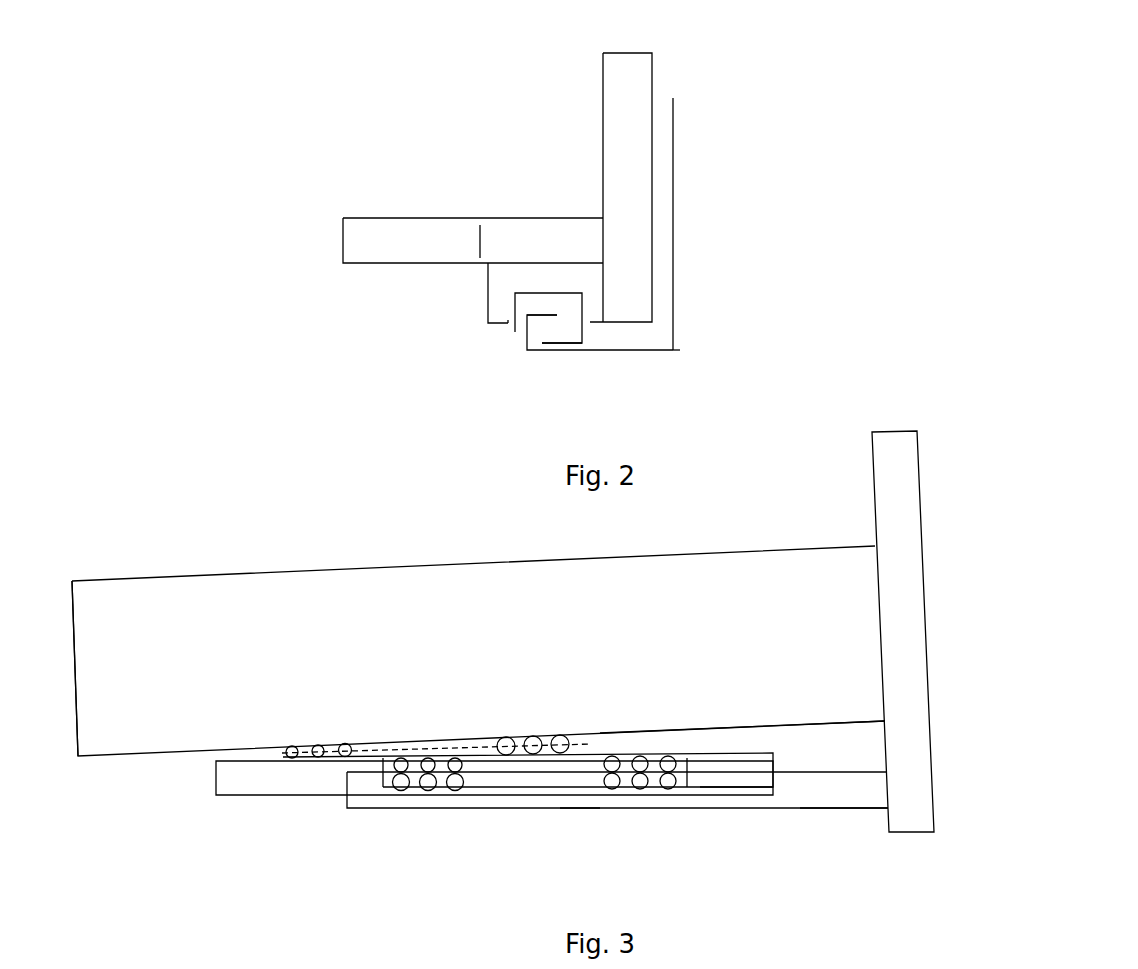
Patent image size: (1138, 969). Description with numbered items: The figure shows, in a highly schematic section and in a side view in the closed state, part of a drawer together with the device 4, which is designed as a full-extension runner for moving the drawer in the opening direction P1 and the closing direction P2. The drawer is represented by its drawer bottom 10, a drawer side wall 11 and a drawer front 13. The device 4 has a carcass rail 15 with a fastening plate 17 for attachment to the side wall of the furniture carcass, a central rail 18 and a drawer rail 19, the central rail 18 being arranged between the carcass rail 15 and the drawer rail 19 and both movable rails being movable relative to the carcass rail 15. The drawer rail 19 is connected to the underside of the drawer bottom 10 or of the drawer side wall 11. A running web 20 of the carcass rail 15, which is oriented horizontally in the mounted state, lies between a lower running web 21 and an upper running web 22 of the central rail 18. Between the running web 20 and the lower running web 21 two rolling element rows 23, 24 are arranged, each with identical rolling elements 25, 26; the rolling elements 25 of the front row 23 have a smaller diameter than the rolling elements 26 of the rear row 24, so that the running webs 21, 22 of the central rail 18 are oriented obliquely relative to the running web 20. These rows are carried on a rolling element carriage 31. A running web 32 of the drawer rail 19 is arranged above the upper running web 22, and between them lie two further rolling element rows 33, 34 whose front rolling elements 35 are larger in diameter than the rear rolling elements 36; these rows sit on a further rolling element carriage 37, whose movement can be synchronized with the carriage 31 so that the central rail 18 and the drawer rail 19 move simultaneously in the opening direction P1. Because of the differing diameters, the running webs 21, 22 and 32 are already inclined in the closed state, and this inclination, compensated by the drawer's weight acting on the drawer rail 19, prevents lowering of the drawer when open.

In FIG. 2, the device 4 is at (699, 357).
In FIG. 3, the device 4 is at (560, 825).
In FIG. 2, the drawer bottom 10 is at (428, 228).
In FIG. 2, the drawer side wall 11 is at (637, 88).
In FIG. 3, the drawer side wall 11 is at (452, 648).
In FIG. 3, the drawer front 13 is at (905, 478).
In FIG. 2, the carcass rail 15 is at (626, 356).
In FIG. 3, the carcass rail 15 is at (342, 811).
In FIG. 2, the fastening plate 17 is at (678, 148).
In FIG. 2, the central rail 18 is at (507, 327).
In FIG. 3, the central rail 18 is at (213, 780).
In FIG. 2, the drawer rail 19 is at (484, 297).
In FIG. 3, the drawer rail 19 is at (110, 764).
In FIG. 2, the running web of the carcass rail 20 is at (543, 316).
In FIG. 3, the running web of the carcass rail 20 is at (823, 780).
In FIG. 2, the lower running web of the central rail 21 is at (561, 345).
In FIG. 3, the lower running web of the central rail 21 is at (762, 788).
In FIG. 2, the upper running web of the central rail 22 is at (577, 293).
In FIG. 3, the upper running web of the central rail 22 is at (776, 752).
In FIG. 3, the rolling element row 23 is at (640, 800).
In FIG. 3, the rolling element row 24 is at (422, 805).
In FIG. 3, the rolling elements 25 is at (603, 793).
In FIG. 3, the rolling elements 26 is at (385, 790).
In FIG. 3, the rolling element carriage 31 is at (507, 797).
In FIG. 2, the running web of the drawer rail 32 is at (540, 258).
In FIG. 3, the running web of the drawer rail 32 is at (690, 728).
In FIG. 3, the rolling element row 33 is at (529, 734).
In FIG. 3, the rolling element row 34 is at (314, 739).
In FIG. 3, the rolling elements 35 is at (558, 740).
In FIG. 3, the rolling elements 36 is at (345, 744).
In FIG. 3, the rolling element carriage 37 is at (419, 741).
In FIG. 3, the opening direction P1 is at (1131, 645).
In FIG. 3, the closing direction P2 is at (1089, 667).